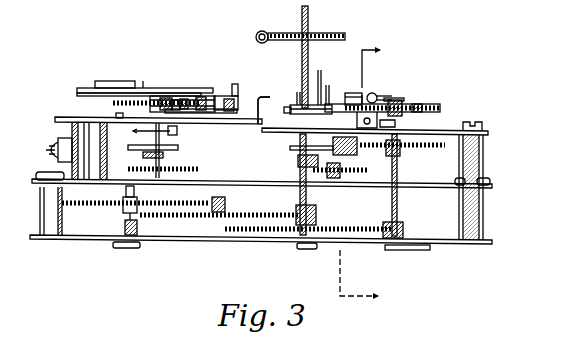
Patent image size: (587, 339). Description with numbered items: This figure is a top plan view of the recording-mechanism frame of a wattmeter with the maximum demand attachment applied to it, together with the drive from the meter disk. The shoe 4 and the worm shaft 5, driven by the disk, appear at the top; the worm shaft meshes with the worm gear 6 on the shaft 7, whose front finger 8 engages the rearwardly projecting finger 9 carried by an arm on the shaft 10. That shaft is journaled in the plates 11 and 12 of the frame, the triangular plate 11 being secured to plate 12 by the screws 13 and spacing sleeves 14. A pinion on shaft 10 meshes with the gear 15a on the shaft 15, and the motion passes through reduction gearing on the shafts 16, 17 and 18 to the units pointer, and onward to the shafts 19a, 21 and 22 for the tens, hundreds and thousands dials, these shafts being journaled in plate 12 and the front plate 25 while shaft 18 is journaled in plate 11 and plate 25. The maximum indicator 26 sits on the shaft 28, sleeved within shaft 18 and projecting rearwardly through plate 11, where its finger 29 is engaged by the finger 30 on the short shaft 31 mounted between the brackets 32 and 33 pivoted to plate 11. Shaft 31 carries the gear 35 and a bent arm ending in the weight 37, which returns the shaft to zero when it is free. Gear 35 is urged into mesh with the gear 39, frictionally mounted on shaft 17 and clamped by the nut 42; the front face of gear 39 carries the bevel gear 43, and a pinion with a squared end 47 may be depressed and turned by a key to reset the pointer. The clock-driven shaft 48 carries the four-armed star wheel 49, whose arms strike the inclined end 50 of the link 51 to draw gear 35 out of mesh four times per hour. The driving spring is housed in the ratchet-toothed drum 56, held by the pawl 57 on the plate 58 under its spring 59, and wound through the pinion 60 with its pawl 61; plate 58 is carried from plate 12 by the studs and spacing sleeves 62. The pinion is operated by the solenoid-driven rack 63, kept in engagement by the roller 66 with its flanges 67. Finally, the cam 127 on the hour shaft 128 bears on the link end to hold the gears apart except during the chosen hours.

The shoe 4 is at (365, 173).
The worm shaft 5 is at (256, 38).
The worm gear 6 is at (338, 35).
The shaft 7 is at (309, 20).
The finger 8 is at (298, 95).
The rearwardly projecting finger 9 is at (285, 109).
The shaft 10 is at (310, 118).
The plate 11 is at (437, 130).
The plate 12 is at (423, 192).
The screws 13 is at (484, 124).
The spacing sleeves 14 is at (484, 158).
The shaft 15 is at (299, 138).
The gear 15a is at (300, 151).
The shaft 16 is at (308, 138).
The shaft 17 is at (346, 178).
The shaft 18 is at (398, 175).
The shaft 19a is at (308, 203).
The shaft 21 is at (224, 198).
The shaft 22 is at (134, 199).
The front plate 25 is at (476, 245).
The indicator 26 is at (428, 250).
The shaft 28 is at (393, 246).
The rearwardly projecting finger 29 is at (364, 120).
The finger 30 is at (396, 124).
The short shaft 31 is at (395, 100).
The bracket 32 is at (402, 102).
The bracket 33 is at (410, 107).
The gear 35 is at (420, 109).
The weight 37 is at (377, 96).
The gear 39 is at (327, 100).
The nut 42 is at (354, 94).
The bevel gear 43 is at (319, 95).
The squared end of pinion shaft 47 is at (364, 98).
The continuously rotating shaft 48 is at (163, 95).
The star wheel 49 is at (143, 81).
The inclined end 50 is at (236, 88).
The link 51 is at (259, 100).
The drum 56 is at (170, 92).
The pawl 57 is at (150, 102).
The plate 58 is at (60, 117).
The spring 59 is at (116, 115).
The pinion 60 is at (116, 103).
The pawl 61 is at (186, 96).
The studs and spacing sleeves 62 is at (68, 133).
The rack 63 is at (184, 134).
The roller 66 is at (242, 101).
The flanges 67 is at (237, 110).
The cam 127 is at (82, 90).
The hour shaft 128 is at (160, 100).